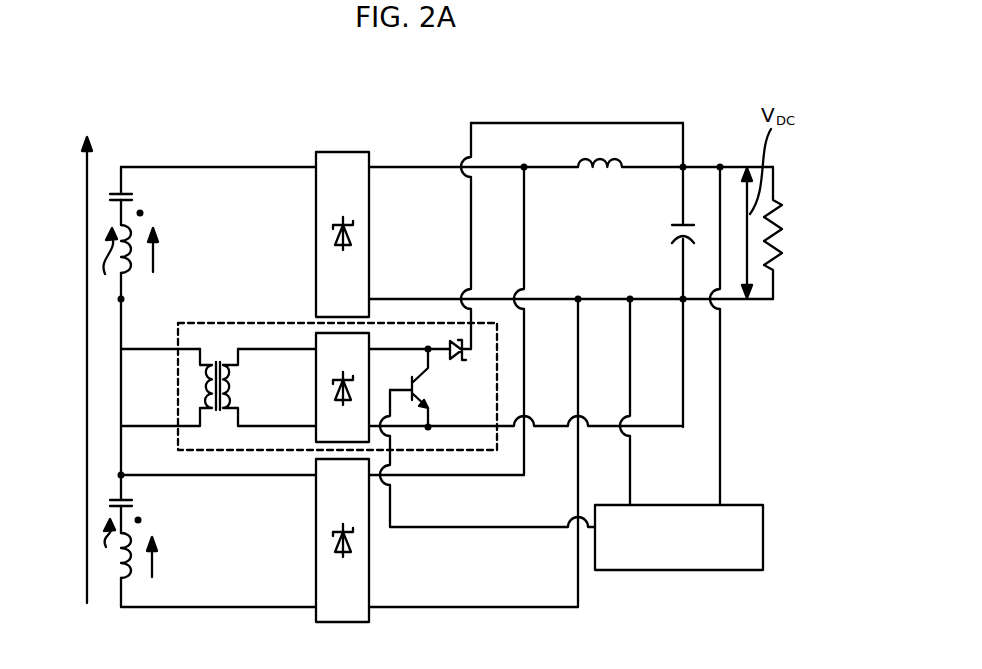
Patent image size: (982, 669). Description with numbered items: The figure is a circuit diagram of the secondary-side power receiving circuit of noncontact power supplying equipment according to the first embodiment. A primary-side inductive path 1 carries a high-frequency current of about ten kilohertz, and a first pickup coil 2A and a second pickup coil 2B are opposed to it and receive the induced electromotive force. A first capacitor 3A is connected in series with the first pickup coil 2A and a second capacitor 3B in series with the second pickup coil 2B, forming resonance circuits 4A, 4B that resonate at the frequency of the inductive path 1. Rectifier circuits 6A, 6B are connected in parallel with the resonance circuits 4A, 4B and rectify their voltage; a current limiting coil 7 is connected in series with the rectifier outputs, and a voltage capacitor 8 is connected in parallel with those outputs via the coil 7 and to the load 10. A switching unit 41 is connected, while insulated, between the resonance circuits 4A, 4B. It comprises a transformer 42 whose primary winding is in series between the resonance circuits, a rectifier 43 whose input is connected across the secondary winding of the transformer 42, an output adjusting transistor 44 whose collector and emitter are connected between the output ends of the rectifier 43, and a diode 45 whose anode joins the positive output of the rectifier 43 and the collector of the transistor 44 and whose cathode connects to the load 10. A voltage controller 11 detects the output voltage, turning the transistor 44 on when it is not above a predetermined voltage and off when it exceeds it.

The primary-side inductive path 1 is at (86, 326).
The first pickup coil 2A is at (130, 273).
The second pickup coil 2B is at (130, 578).
The first capacitor 3A is at (133, 194).
The second capacitor 3B is at (133, 500).
The resonance circuit 4A is at (105, 265).
The resonance circuit 4B is at (106, 548).
The rectifier circuit 6A is at (343, 152).
The rectifier circuit 6B is at (370, 622).
The current limiting coil 7 is at (614, 153).
The voltage capacitor 8 is at (673, 232).
The load 10 is at (782, 236).
The voltage controller 11 is at (712, 570).
The switching unit 41 is at (497, 450).
The transformer 42 is at (232, 396).
The rectifier 43 is at (316, 391).
The output adjusting transistor 44 is at (411, 376).
The diode 45 is at (462, 362).